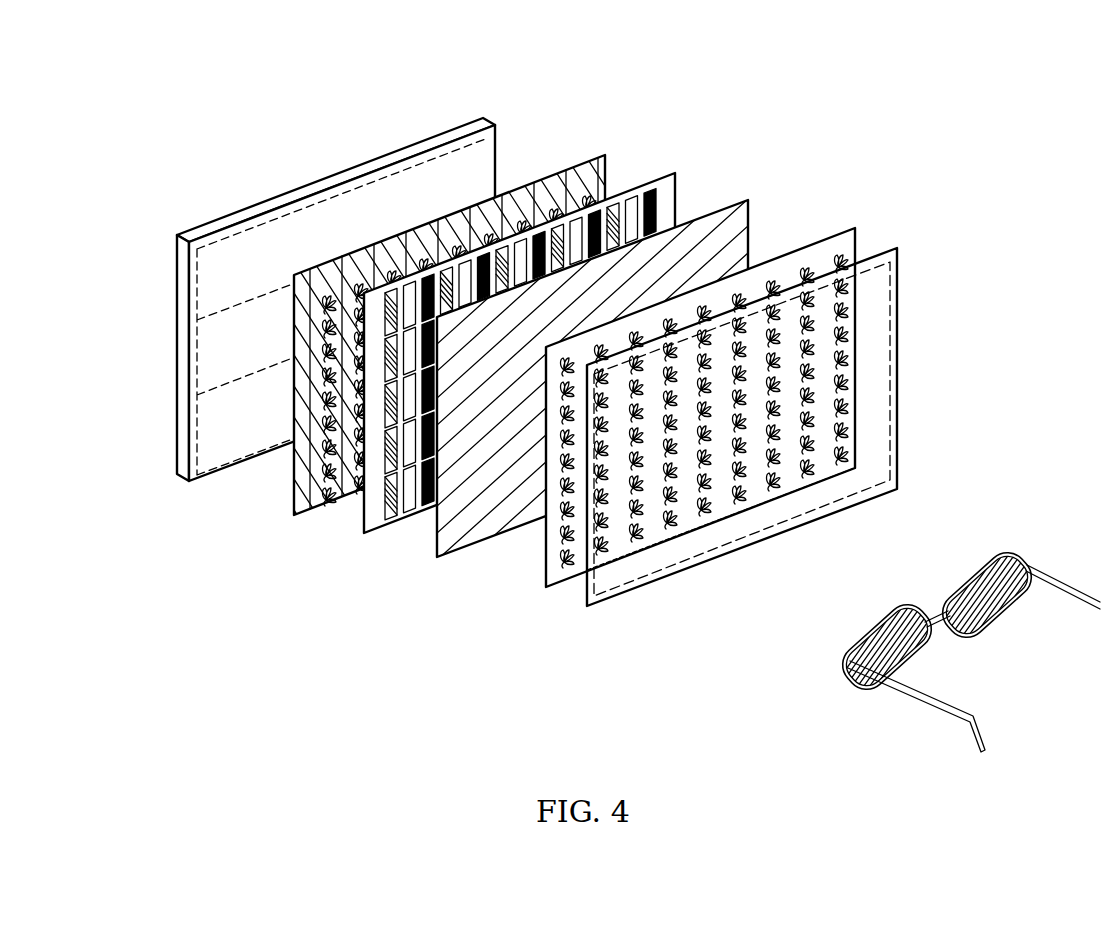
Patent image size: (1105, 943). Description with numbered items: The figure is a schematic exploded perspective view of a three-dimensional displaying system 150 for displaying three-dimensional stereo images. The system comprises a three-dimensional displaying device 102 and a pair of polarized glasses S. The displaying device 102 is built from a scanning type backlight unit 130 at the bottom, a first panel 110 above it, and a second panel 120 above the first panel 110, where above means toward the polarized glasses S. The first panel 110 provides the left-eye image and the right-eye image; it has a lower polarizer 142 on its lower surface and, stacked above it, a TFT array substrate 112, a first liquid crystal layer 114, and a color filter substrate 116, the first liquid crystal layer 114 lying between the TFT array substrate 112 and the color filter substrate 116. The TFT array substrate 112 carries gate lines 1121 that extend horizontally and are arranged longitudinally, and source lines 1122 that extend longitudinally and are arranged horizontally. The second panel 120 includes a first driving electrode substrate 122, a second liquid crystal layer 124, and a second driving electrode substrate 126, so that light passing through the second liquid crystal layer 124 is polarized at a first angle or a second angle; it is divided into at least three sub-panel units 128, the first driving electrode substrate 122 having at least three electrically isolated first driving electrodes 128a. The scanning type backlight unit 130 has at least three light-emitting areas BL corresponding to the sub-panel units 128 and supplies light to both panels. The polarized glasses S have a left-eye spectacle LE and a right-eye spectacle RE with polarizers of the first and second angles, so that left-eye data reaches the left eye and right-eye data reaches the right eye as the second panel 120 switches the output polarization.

The 3D displaying system 150 is at (205, 86).
The 3D displaying device 102 is at (455, 433).
The scanning type backlight unit 130 is at (166, 488).
The light-emitting areas BL is at (190, 447).
The lower polarizer 142 is at (455, 317).
The TFT array substrate 112 is at (293, 498).
The gate lines 1121 is at (293, 358).
The source lines 1122 is at (383, 263).
The first liquid crystal layer 114 is at (338, 498).
The color filter substrate 116 is at (380, 518).
The first panel 110 is at (589, 433).
The second panel 120 is at (755, 439).
The second liquid crystal layer 124 is at (840, 262).
The second driving electrode substrate 126 is at (698, 391).
The sub-panel units 128 is at (597, 553).
The first driving electrode substrate 122 is at (898, 282).
The first driving electrodes 128a is at (887, 333).
The pair of polarized glasses S is at (940, 656).
The left-eye spectacle LE is at (865, 648).
The right-eye spectacle RE is at (987, 577).